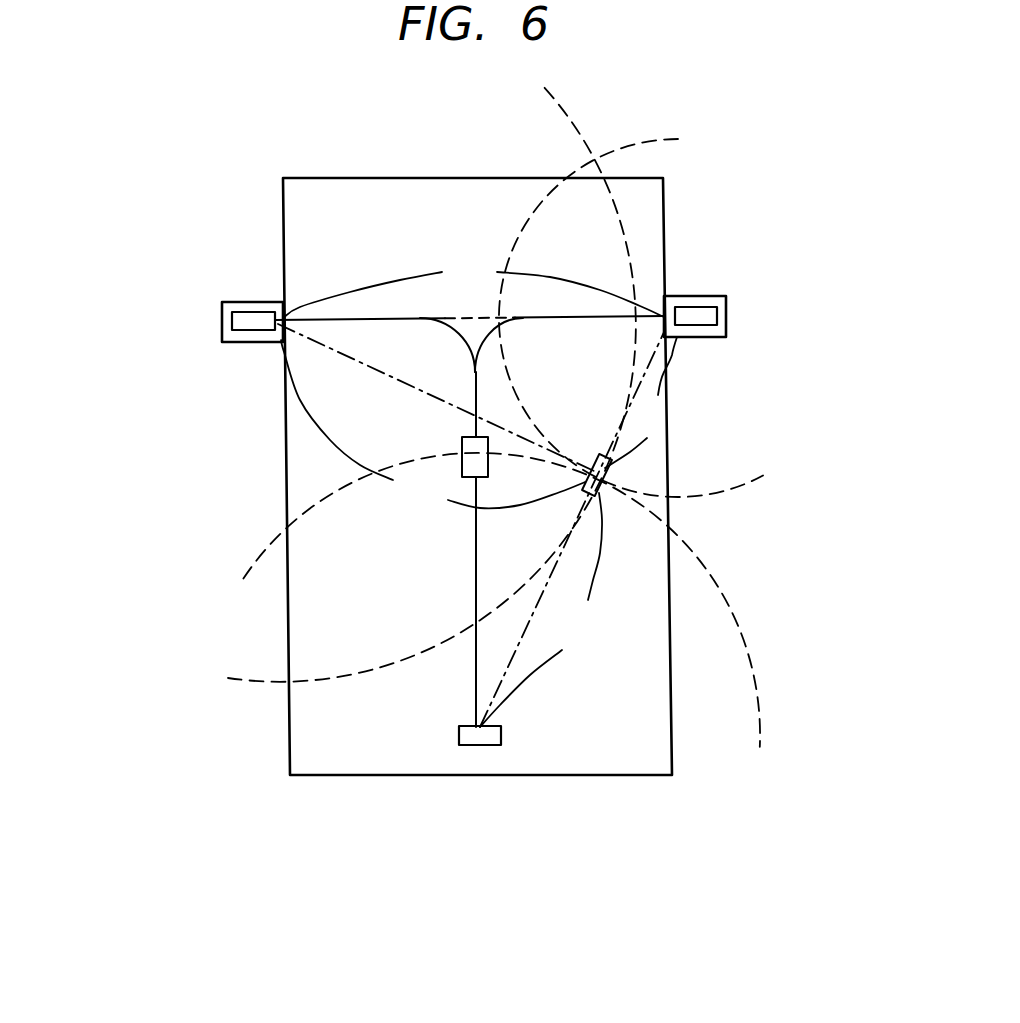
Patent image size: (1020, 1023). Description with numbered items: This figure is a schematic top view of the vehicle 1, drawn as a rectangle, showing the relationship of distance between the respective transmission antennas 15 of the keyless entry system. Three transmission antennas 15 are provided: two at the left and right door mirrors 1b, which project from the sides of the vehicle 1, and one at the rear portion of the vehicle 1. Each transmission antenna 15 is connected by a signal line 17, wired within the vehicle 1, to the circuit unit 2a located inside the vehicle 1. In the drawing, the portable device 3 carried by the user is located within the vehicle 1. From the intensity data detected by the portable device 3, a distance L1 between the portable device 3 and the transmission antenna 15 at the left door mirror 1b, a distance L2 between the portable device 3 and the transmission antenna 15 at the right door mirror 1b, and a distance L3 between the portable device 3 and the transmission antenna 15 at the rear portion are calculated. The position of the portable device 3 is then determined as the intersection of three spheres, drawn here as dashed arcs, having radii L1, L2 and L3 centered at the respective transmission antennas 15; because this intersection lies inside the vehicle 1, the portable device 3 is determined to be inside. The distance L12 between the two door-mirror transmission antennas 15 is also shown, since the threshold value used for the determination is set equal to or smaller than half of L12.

The vehicle 1 is at (664, 203).
The door mirror 1b is at (222, 318).
The circuit unit 2a is at (462, 440).
The portable device 3 is at (604, 478).
The transmission antenna 15 is at (252, 312).
The signal line 17 is at (437, 318).
The distance L1 is at (433, 424).
The distance L2 is at (642, 402).
The distance L3 is at (541, 610).
The distance L12 is at (473, 287).